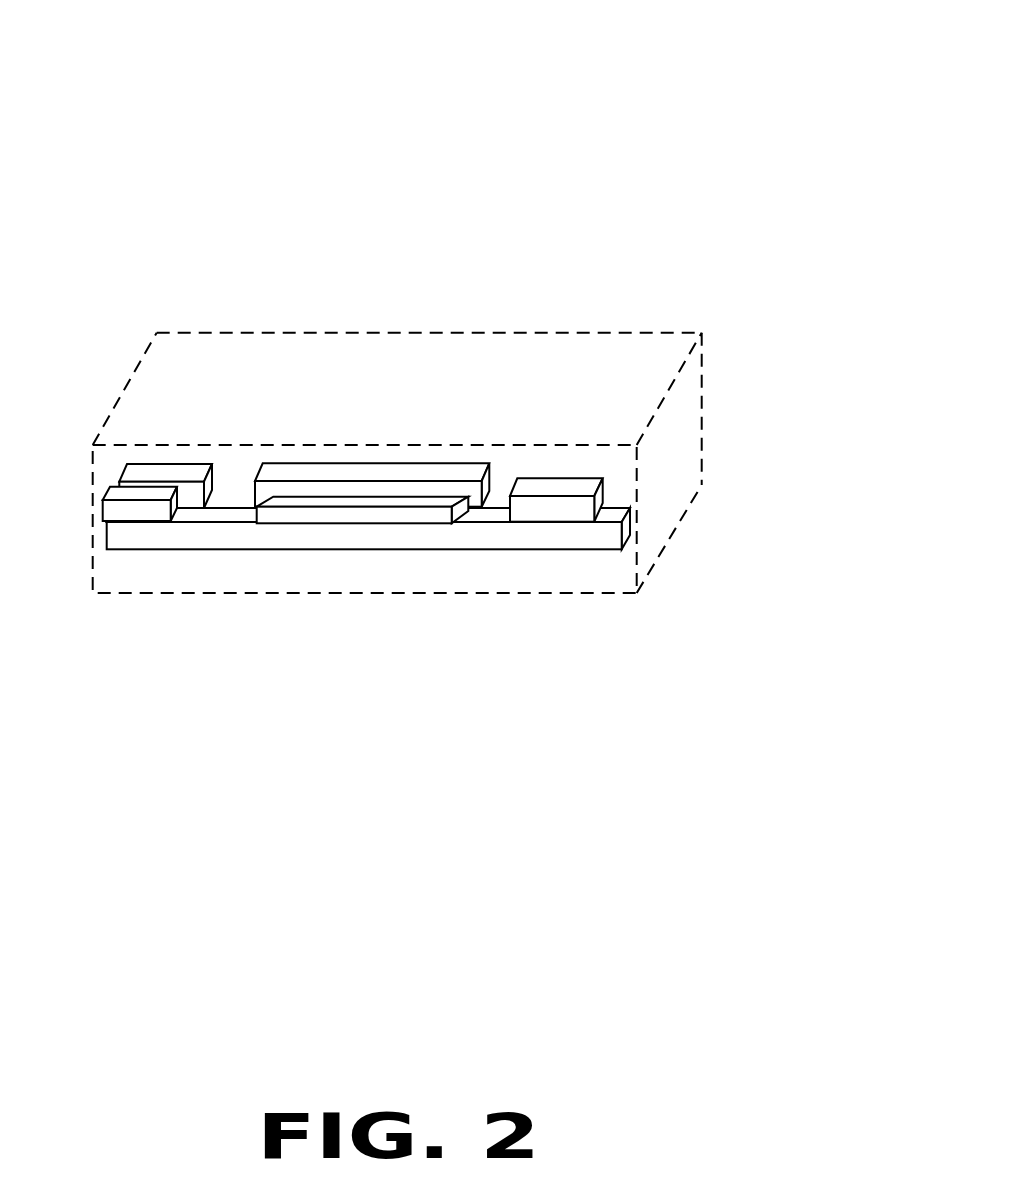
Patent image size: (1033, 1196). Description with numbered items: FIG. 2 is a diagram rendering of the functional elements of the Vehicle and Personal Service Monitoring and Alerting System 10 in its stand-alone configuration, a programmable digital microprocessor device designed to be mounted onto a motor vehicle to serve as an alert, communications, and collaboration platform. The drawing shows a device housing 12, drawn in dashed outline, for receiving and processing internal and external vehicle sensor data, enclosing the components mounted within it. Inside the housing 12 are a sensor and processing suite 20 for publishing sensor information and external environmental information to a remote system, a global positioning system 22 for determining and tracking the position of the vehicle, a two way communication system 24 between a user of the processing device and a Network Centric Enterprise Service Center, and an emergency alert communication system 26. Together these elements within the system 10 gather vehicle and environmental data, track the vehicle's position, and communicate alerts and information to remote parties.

The Vehicle and Personal Service Monitoring and Alerting System 10 is at (681, 129).
The device housing 12 is at (622, 333).
The sensor and processing suite 20 is at (166, 470).
The global positioning system 22 is at (535, 510).
The two way communication system 24 is at (387, 472).
The emergency alert communication system 26 is at (590, 538).